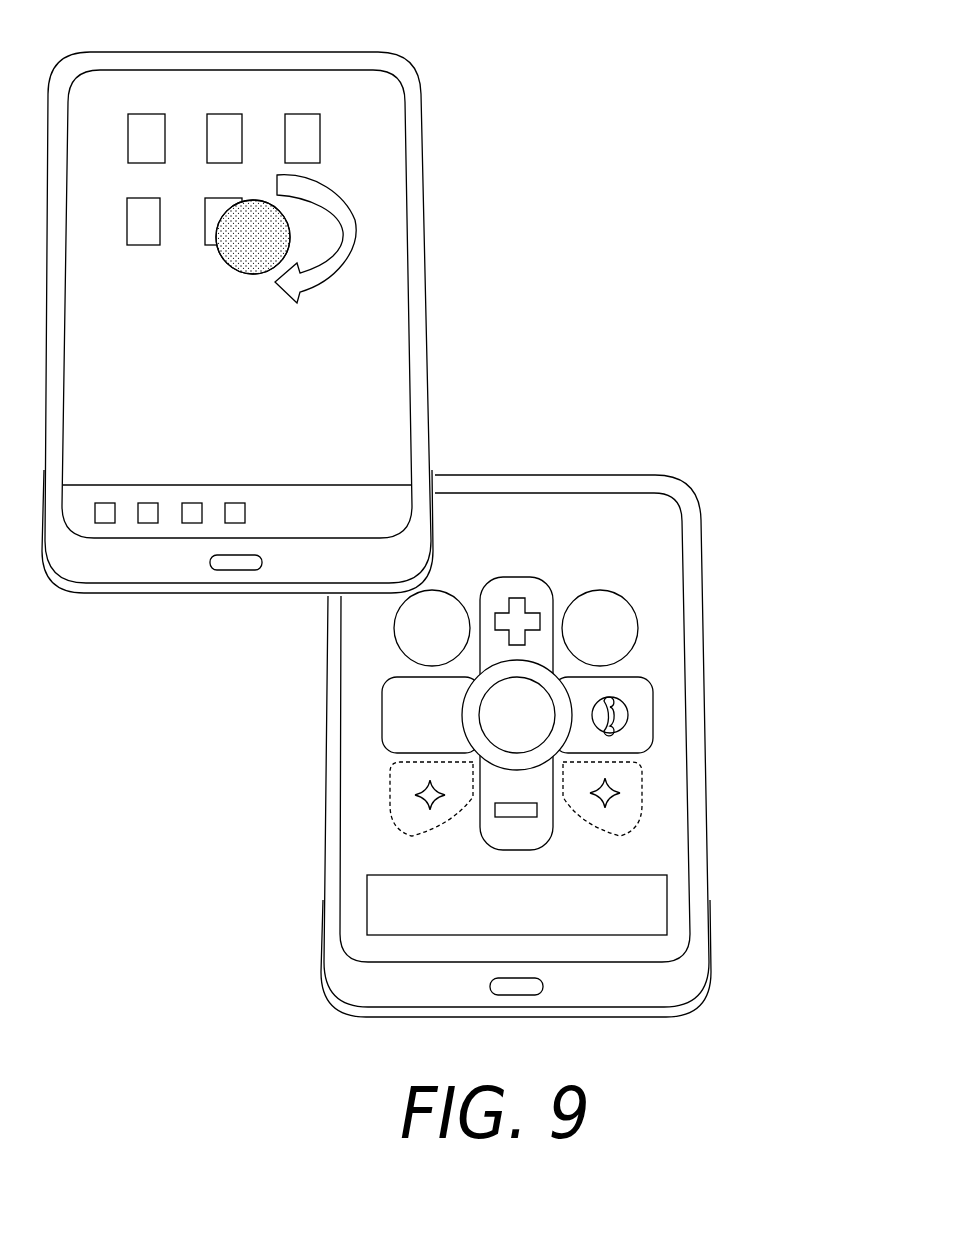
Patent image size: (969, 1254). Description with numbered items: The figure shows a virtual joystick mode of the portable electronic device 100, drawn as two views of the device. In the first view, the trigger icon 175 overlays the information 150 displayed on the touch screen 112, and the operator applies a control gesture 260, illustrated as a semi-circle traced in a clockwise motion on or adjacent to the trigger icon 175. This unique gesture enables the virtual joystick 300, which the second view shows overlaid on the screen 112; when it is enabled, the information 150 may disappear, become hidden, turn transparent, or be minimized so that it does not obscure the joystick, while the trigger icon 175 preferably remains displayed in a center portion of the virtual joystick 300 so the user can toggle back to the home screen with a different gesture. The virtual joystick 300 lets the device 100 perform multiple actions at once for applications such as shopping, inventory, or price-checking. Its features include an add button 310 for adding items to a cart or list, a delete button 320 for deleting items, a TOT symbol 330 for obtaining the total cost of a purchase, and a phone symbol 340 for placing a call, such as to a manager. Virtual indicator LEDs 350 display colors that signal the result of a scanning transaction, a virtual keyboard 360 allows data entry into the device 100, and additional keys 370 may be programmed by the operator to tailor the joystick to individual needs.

The electronic device 100 is at (446, 80).
The screen 112 is at (367, 433).
The information 150 is at (122, 108).
The trigger icon 175 is at (250, 258).
The control gesture 260 is at (324, 310).
The virtual joystick 300 is at (512, 645).
The add button 310 is at (517, 607).
The delete button 320 is at (512, 810).
The TOT symbol 330 is at (392, 730).
The phone symbol 340 is at (627, 712).
The virtual indicator LEDs 350 is at (430, 630).
The virtual keyboard 360 is at (387, 913).
The additional keys 370 is at (408, 810).